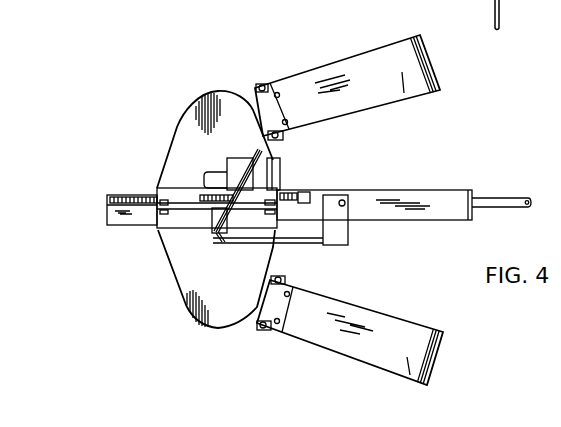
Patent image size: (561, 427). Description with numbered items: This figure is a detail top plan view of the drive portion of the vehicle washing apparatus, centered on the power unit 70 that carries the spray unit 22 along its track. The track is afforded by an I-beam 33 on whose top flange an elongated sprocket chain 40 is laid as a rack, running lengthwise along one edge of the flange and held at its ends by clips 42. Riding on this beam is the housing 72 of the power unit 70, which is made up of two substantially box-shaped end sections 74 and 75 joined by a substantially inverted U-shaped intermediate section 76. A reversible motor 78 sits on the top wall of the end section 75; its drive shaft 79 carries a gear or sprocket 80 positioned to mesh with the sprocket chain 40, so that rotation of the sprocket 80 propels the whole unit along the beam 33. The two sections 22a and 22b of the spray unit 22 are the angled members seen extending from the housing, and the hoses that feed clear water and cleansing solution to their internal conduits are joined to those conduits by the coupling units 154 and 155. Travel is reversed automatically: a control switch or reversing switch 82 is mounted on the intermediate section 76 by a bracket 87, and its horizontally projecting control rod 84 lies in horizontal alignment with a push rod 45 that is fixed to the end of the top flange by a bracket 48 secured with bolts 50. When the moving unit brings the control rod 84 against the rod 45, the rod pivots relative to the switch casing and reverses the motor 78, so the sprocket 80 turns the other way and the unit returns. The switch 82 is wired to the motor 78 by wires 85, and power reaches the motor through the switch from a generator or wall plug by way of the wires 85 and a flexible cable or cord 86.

The spray unit 22 is at (305, 85).
The section of the spray unit 22a is at (393, 312).
The section of the spray unit 22b is at (357, 56).
The beam 33 is at (400, 192).
The sprocket chain 40 is at (128, 194).
The clips 42 is at (303, 192).
The rod 45 is at (303, 248).
The bracket 48 is at (346, 236).
The bolts 50 is at (343, 200).
The power unit 70 is at (178, 122).
The housing 72 is at (248, 141).
The end section 74 is at (180, 302).
The end section 75 is at (205, 93).
The intermediate section 76 is at (170, 188).
The reversible motor 78 is at (282, 150).
The drive shaft 79 is at (207, 166).
The sprocket 80 is at (206, 194).
The reversing switch 82 is at (214, 231).
The control rod 84 is at (214, 246).
The wires 85 is at (225, 221).
The flexible cable 86 is at (295, 148).
The bracket 87 is at (256, 215).
The coupling unit 154 is at (262, 84).
The coupling unit 155 is at (282, 283).